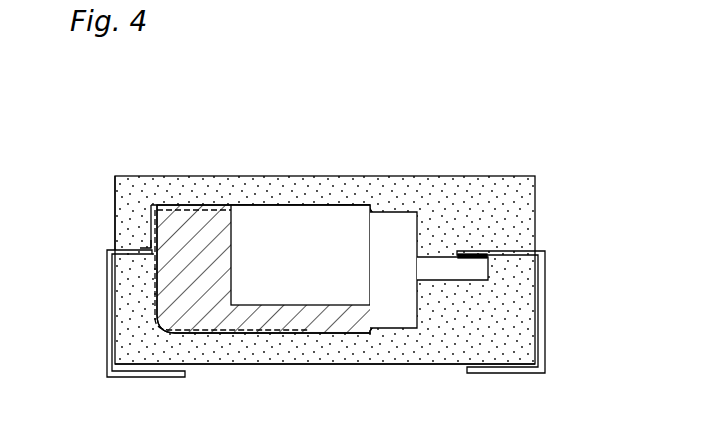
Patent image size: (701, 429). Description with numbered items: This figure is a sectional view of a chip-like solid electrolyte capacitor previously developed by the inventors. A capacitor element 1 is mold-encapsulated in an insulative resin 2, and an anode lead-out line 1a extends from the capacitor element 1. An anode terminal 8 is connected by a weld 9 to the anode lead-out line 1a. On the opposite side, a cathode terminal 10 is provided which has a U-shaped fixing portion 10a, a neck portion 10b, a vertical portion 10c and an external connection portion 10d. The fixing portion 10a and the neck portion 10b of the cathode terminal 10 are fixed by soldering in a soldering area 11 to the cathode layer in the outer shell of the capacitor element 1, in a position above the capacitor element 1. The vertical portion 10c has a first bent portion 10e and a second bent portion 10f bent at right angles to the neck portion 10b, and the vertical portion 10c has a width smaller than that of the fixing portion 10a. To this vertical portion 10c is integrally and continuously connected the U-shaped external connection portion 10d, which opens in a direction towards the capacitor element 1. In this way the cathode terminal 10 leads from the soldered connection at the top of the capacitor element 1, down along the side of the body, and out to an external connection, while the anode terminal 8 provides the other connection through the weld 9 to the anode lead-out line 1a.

The capacitor element 1 is at (392, 322).
The anode lead-out line 1a is at (462, 273).
The insulative resin 2 is at (508, 188).
The anode terminal 8 is at (545, 317).
The weld 9 is at (467, 252).
The cathode terminal 10 is at (107, 310).
The U-shaped fixing portion 10a is at (300, 218).
The neck portion 10b is at (159, 205).
The vertical portion 10c is at (150, 222).
The external connection portion 10d is at (107, 347).
The first bent portion 10e is at (150, 203).
The second bent portion 10f is at (148, 247).
The soldering area 11 is at (190, 245).